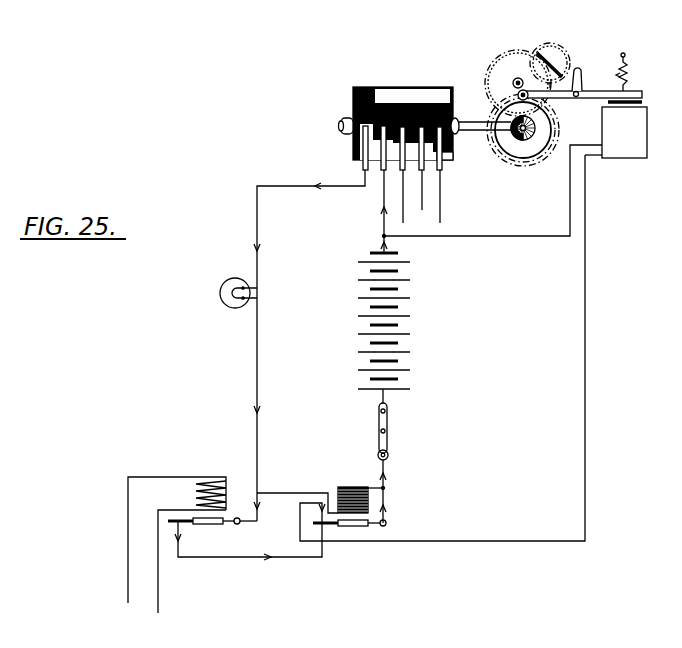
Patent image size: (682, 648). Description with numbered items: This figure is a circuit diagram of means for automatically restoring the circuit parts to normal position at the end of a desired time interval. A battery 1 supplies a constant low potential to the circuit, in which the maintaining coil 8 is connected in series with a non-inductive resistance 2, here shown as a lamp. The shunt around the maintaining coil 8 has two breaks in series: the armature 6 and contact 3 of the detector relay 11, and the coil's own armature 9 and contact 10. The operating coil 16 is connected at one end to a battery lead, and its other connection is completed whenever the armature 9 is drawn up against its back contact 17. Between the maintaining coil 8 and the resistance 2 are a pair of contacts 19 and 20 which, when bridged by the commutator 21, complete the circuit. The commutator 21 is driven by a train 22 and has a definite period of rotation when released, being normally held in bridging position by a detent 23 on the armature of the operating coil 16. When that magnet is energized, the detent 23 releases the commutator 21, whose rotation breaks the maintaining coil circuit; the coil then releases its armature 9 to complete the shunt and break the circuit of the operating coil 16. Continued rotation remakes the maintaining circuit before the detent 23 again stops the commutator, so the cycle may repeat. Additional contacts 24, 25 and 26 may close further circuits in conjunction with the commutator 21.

The battery 1 is at (376, 321).
The non-inductive resistance 2 is at (229, 291).
The contact 3 is at (173, 527).
The armature 6 is at (225, 532).
The maintaining coil 8 is at (353, 488).
The armature 9 is at (353, 528).
The contact 10 is at (320, 528).
The detector relay 11 is at (197, 495).
The operating coil 16 is at (624, 132).
The back contact 17 is at (320, 508).
The contact 19 is at (365, 128).
The contact 20 is at (380, 174).
The commutator 21 is at (403, 123).
The train 22 is at (501, 65).
The detent 23 is at (581, 76).
The additional contact 24 is at (404, 172).
The additional contact 25 is at (423, 172).
The additional contact 26 is at (446, 157).